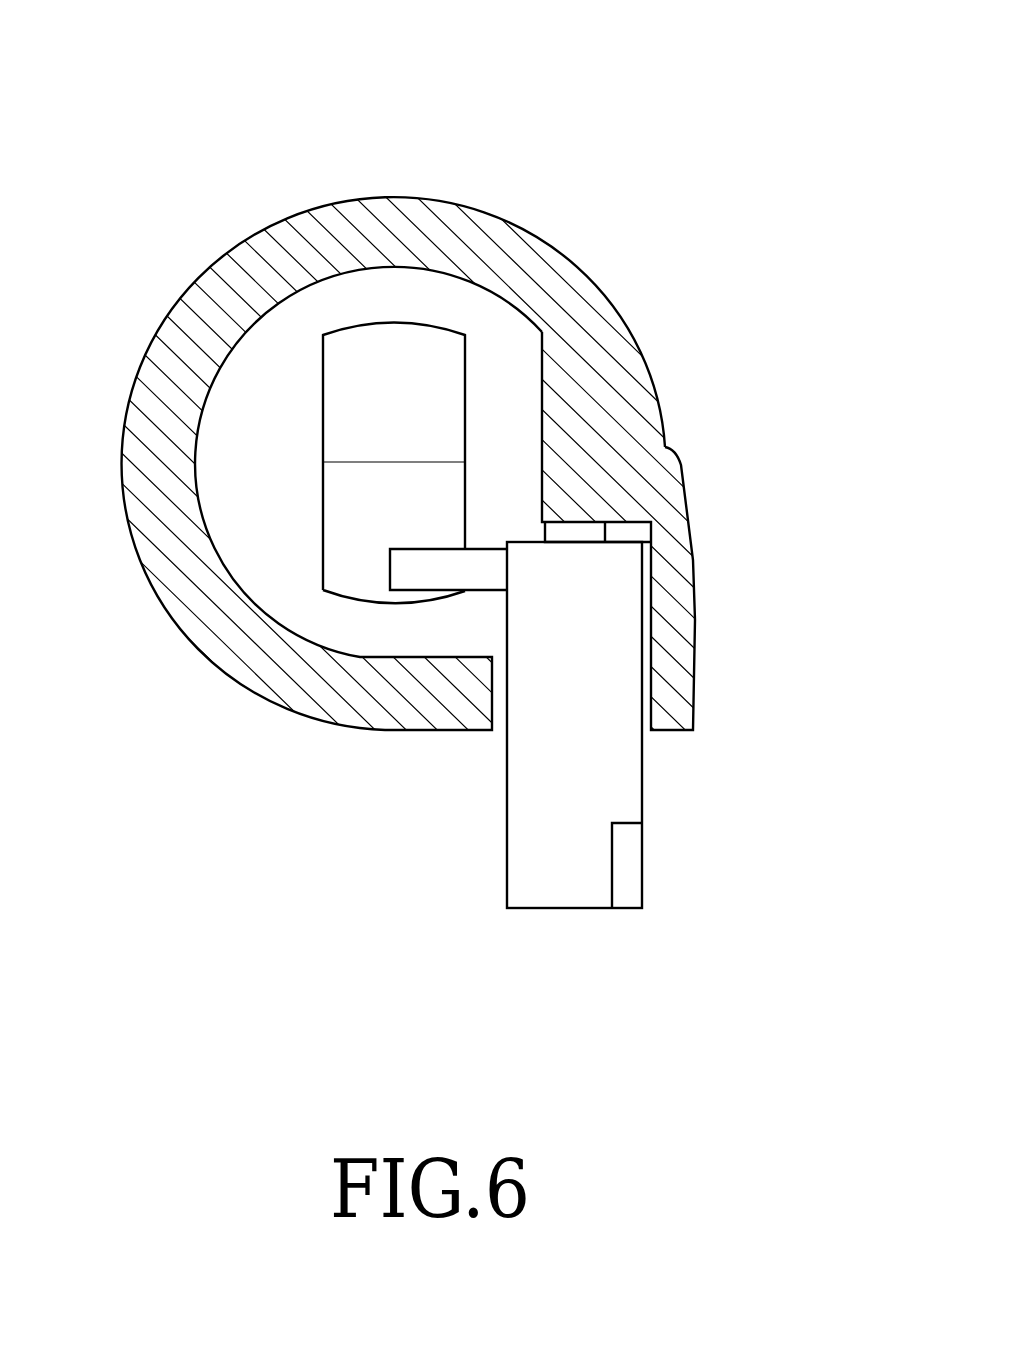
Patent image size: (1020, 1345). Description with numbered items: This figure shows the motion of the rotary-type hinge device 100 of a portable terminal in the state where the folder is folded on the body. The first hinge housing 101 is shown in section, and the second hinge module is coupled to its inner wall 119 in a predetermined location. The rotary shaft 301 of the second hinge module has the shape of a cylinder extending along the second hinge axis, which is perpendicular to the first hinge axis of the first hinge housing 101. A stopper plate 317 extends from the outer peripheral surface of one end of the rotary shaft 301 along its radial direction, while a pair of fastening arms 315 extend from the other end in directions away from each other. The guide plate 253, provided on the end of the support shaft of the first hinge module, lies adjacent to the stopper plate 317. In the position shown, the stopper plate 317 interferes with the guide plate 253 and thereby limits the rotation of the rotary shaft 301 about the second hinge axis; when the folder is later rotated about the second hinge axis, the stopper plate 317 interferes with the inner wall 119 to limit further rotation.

The rotary-type hinge device 100 is at (345, 50).
The first hinge housing 101 is at (150, 292).
The inner wall 119 is at (653, 573).
The guide plate 253 is at (353, 573).
The rotary shaft 301 is at (627, 647).
The fastening arms 315 is at (630, 871).
The stopper plate 317 is at (473, 573).